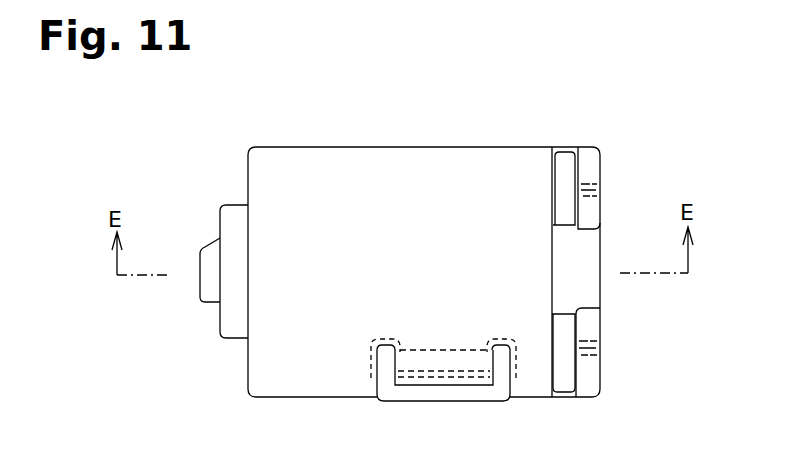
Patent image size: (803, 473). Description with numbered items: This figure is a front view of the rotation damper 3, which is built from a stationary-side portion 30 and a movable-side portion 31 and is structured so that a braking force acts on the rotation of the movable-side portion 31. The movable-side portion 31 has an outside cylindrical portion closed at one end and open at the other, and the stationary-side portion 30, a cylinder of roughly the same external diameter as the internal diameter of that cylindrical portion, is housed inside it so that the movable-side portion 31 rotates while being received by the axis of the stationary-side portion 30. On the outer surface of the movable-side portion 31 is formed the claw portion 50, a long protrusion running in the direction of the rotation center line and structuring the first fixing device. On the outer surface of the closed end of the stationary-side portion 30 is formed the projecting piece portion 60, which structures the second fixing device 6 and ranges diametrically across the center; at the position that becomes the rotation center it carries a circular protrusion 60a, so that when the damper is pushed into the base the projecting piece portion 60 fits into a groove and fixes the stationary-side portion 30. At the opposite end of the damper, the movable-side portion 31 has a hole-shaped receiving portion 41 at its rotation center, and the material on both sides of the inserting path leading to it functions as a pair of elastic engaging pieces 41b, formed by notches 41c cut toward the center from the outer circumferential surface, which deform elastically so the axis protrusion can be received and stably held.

The rotation damper 3 is at (377, 153).
The movable-side portion 31 is at (467, 147).
The second fixing device 6 is at (194, 193).
The projecting piece portion 60 is at (237, 205).
The circular protrusion 60a is at (200, 248).
The stationary-side portion 30 is at (237, 312).
The receiving portion 41 is at (583, 286).
The elastic engaging pieces 41b is at (595, 203).
The notches 41c is at (565, 165).
The claw portion 50 is at (457, 403).